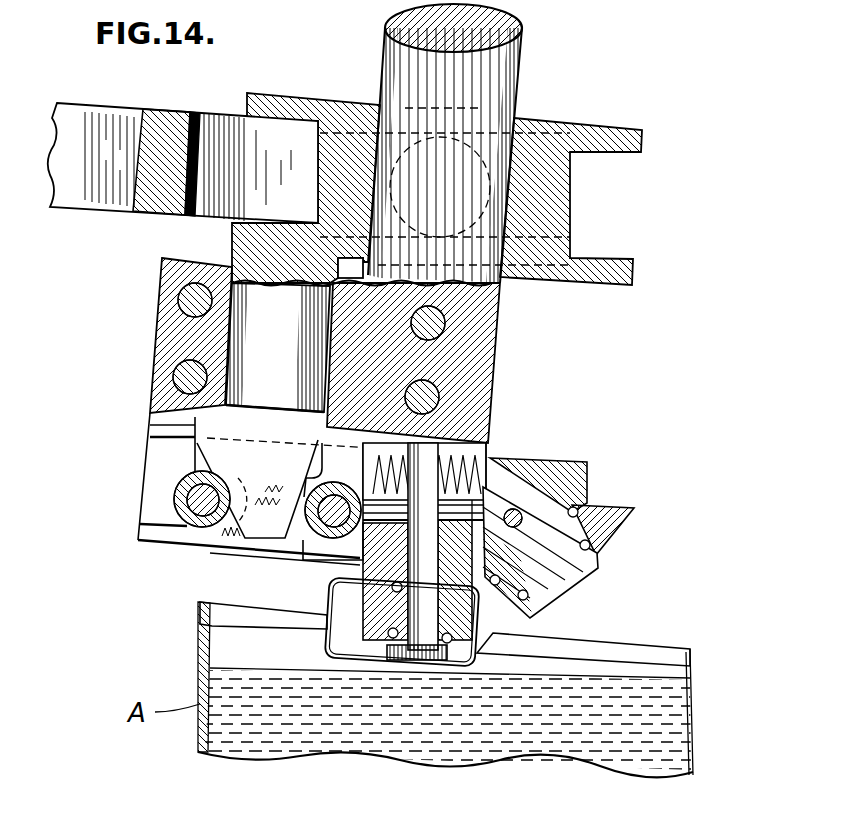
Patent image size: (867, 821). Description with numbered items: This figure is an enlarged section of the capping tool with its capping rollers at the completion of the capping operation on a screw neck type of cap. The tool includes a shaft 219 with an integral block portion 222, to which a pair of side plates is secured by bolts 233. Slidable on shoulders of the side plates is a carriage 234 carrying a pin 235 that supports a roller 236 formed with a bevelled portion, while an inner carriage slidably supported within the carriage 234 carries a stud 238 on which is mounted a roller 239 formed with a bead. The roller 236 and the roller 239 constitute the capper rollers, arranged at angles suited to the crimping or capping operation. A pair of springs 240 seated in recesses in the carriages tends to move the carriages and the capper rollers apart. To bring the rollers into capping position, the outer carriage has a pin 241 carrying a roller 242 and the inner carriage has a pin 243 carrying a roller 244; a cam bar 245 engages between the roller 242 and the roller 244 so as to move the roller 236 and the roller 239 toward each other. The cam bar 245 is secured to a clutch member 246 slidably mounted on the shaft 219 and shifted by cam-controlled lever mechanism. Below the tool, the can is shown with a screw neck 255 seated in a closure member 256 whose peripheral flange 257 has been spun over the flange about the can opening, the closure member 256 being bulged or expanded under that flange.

The shaft 219 is at (493, 78).
The clutch member 246 is at (597, 130).
The block portion 222 is at (487, 328).
The bolts 233 is at (442, 397).
The springs 240 is at (493, 467).
The carriage 234 is at (577, 462).
The roller 236 is at (620, 523).
The pin 235 is at (563, 585).
The pin 241 is at (192, 497).
The roller 242 is at (183, 517).
The pin 243 is at (322, 538).
The roller 244 is at (310, 485).
The cam bar 245 is at (263, 520).
The screw neck 255 is at (340, 583).
The peripheral flange 257 is at (327, 613).
The stud 238 is at (410, 655).
The roller 239 is at (372, 648).
The closure member 256 is at (420, 667).